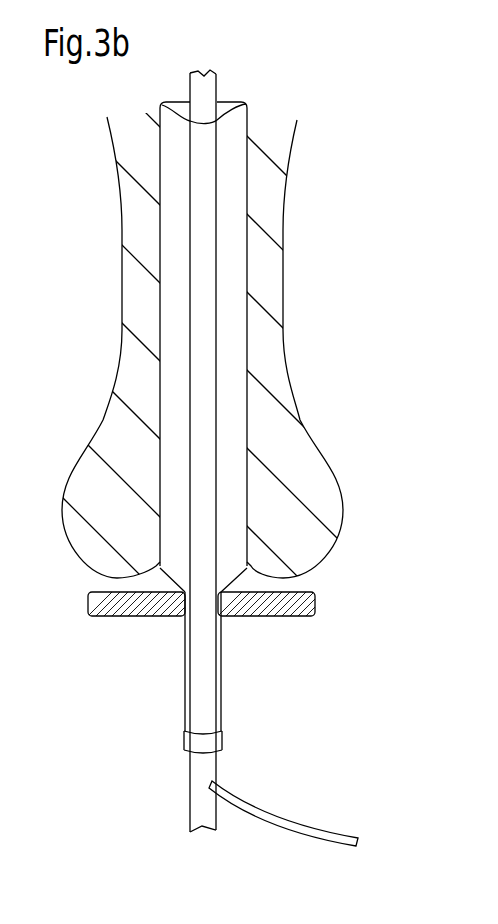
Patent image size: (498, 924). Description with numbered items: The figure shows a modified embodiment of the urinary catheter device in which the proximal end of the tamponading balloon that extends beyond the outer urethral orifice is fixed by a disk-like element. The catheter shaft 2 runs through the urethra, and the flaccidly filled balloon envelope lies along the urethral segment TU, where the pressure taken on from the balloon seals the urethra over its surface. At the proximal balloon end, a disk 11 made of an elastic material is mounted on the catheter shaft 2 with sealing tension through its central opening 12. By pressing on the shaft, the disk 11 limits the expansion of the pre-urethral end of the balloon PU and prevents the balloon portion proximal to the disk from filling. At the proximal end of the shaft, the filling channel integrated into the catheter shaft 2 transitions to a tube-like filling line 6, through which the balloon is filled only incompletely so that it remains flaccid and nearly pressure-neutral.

The catheter shaft 2 is at (205, 175).
The urethral segment TU is at (175, 270).
The disk 11 is at (88, 601).
The central opening 12 is at (182, 618).
The pre-urethral end of the balloon PU is at (185, 687).
The tube-like filling line 6 is at (268, 816).